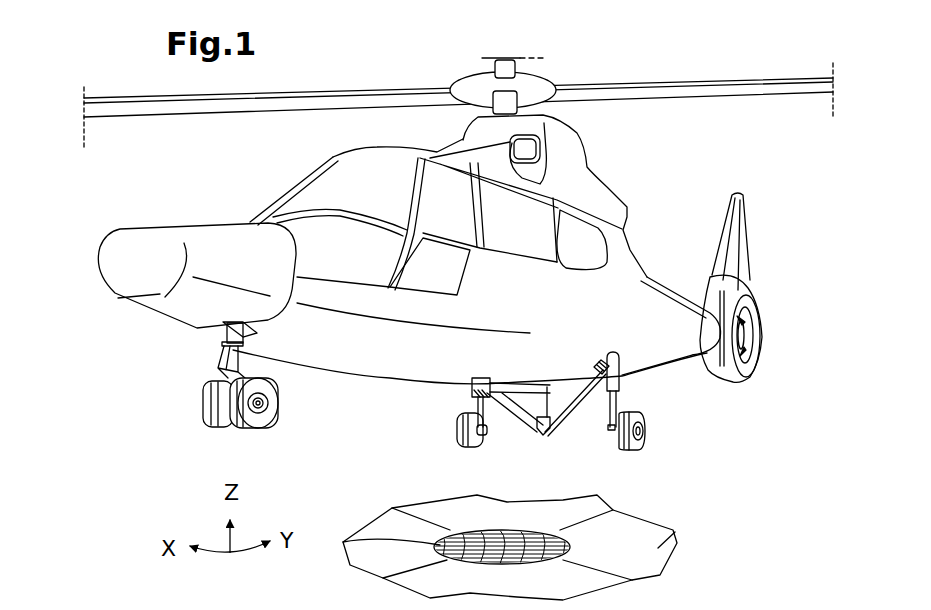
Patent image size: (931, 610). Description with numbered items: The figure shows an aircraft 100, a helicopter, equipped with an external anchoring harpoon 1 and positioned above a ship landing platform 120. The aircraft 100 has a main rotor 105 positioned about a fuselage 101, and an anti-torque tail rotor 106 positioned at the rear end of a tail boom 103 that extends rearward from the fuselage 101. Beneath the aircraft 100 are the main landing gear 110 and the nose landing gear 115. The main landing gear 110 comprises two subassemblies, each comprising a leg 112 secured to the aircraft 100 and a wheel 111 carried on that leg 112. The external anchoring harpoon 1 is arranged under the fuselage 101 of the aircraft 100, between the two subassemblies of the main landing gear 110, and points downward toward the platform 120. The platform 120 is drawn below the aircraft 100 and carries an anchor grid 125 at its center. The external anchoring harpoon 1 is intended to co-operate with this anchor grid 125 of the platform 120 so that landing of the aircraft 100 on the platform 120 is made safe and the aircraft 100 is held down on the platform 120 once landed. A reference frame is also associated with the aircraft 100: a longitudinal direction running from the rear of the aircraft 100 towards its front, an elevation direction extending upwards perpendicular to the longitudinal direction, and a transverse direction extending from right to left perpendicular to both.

The external anchoring harpoon 1 is at (533, 442).
The aircraft 100 is at (142, 362).
The fuselage 101 is at (286, 198).
The tail boom 103 is at (678, 362).
The main rotor 105 is at (574, 69).
The anti-torque tail rotor 106 is at (757, 283).
The main landing gear 110 is at (472, 452).
The wheel 111 is at (457, 438).
The leg 112 is at (471, 395).
The nose landing gear 115 is at (210, 411).
The platform 120 is at (672, 533).
The anchor grid 125 is at (372, 538).